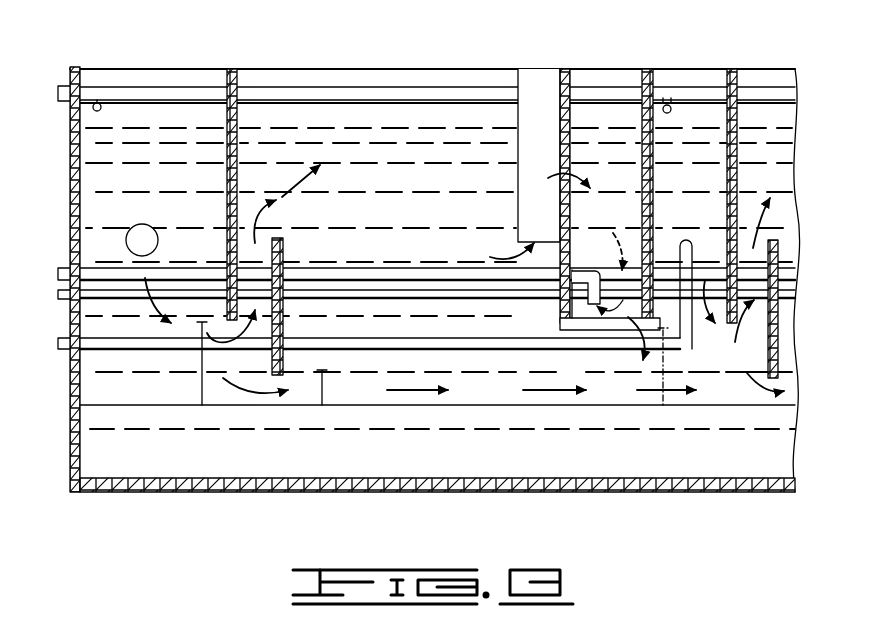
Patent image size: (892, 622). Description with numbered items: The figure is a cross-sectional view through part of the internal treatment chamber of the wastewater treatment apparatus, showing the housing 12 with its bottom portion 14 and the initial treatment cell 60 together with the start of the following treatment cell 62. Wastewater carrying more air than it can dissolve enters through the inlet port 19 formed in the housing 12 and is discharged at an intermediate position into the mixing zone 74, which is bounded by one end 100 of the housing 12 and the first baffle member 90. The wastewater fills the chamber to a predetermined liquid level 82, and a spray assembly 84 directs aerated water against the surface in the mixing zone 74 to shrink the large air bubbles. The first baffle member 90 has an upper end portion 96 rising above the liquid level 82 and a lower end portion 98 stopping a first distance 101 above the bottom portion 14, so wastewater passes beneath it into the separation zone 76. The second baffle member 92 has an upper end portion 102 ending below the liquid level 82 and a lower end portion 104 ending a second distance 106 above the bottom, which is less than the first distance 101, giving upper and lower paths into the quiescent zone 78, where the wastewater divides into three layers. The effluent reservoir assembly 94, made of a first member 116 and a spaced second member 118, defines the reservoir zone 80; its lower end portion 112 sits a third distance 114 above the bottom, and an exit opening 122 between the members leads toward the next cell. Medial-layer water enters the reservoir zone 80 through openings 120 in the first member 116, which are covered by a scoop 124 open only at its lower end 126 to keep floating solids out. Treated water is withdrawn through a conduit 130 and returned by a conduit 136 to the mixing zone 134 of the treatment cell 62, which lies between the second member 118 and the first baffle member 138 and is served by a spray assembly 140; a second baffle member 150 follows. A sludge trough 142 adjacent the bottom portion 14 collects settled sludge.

The housing 12 is at (386, 57).
The bottom portion 14 is at (90, 405).
The inlet port 19 is at (140, 225).
The treatment cell 60 is at (318, 106).
The treatment cell 62 is at (713, 112).
The mixing zone 74 is at (118, 113).
The separation zone 76 is at (255, 183).
The quiescent zone 78 is at (430, 183).
The reservoir zone 80 is at (622, 138).
The predetermined liquid level 82 is at (253, 127).
The spray assembly 84 is at (103, 86).
The first baffle member 90 is at (218, 178).
The second baffle member 92 is at (286, 278).
The effluent reservoir assembly 94 is at (512, 178).
The upper end portion 96 is at (232, 72).
The lower end portion 98 is at (200, 310).
The end 100 is at (75, 163).
The first distance 101 is at (200, 392).
The upper end portion 102 is at (283, 243).
The lower end portion 104 is at (278, 365).
The second distance 106 is at (325, 392).
The lower end portion 112 is at (565, 322).
The third distance 114 is at (662, 362).
The first substantially vertically disposed member 116 is at (566, 78).
The second substantially vertically disposed member 118 is at (655, 200).
The openings 120 is at (575, 165).
The exit opening 122 is at (590, 325).
The scoop 124 is at (540, 80).
The lower end 126 is at (515, 246).
The conduit 130 is at (372, 276).
The mixing zone 134 is at (688, 112).
The conduit 136 is at (375, 342).
The first baffle member 138 is at (735, 183).
The spray assembly 140 is at (673, 86).
The sludge trough 142 is at (640, 468).
The second baffle member 150 is at (773, 255).